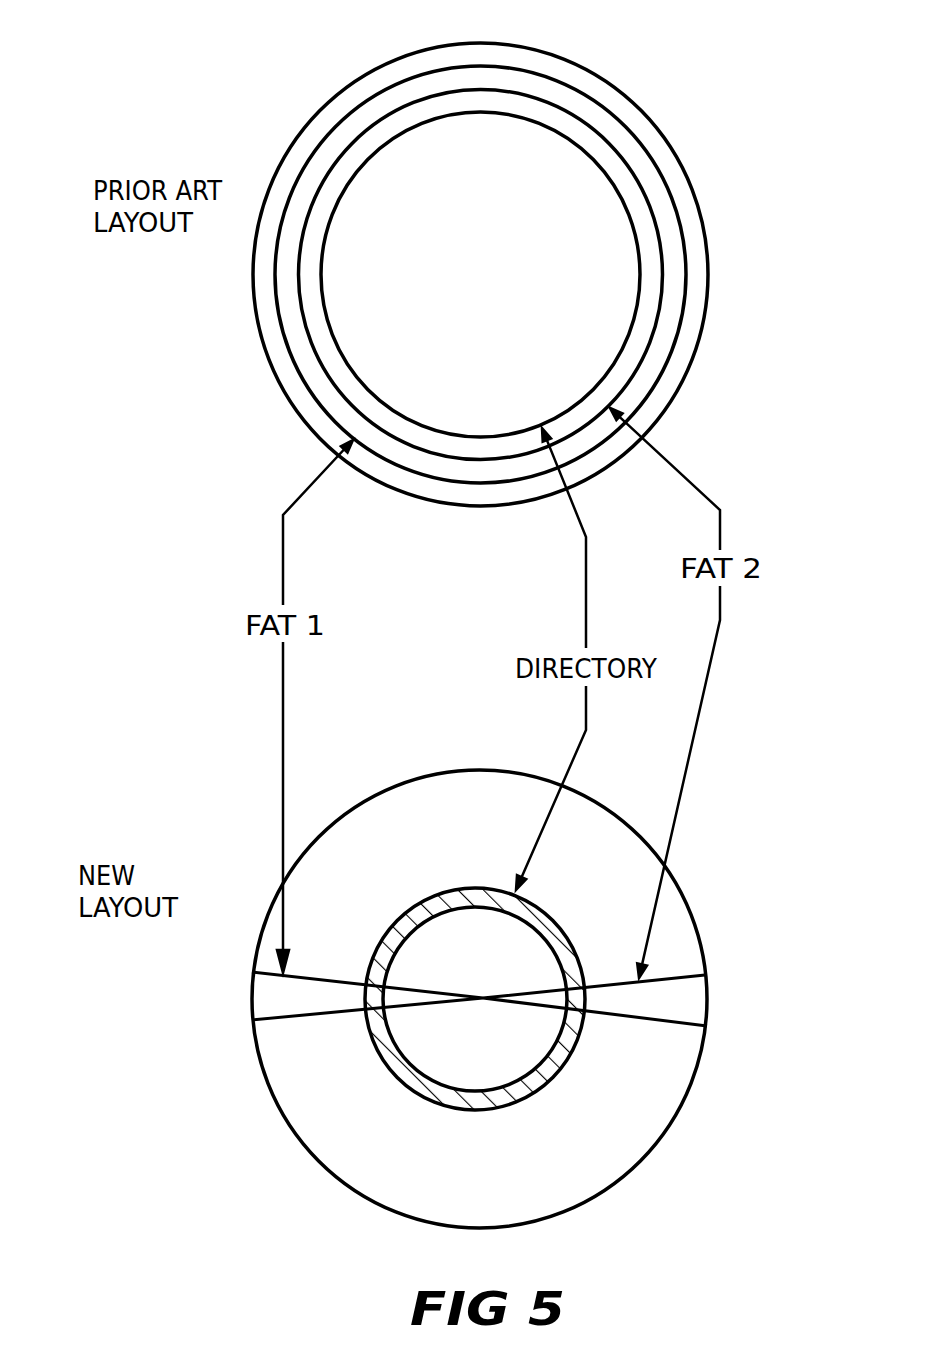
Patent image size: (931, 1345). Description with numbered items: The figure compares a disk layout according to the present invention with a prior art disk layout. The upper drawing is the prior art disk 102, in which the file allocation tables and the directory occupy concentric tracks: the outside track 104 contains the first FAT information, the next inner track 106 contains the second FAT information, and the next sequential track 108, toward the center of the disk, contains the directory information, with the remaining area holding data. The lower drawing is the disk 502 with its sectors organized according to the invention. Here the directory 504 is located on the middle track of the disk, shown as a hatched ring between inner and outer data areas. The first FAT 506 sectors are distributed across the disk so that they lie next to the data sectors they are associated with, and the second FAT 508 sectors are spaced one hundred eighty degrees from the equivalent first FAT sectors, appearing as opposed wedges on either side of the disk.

The disk 102 is at (457, 253).
The outside track 104 is at (307, 391).
The next inner track 106 is at (600, 130).
The next sequential track 108 is at (610, 372).
The disk 502 is at (472, 970).
The directory 504 is at (397, 1080).
The FAT 1 506 is at (250, 996).
The FAT 2 508 is at (685, 1000).